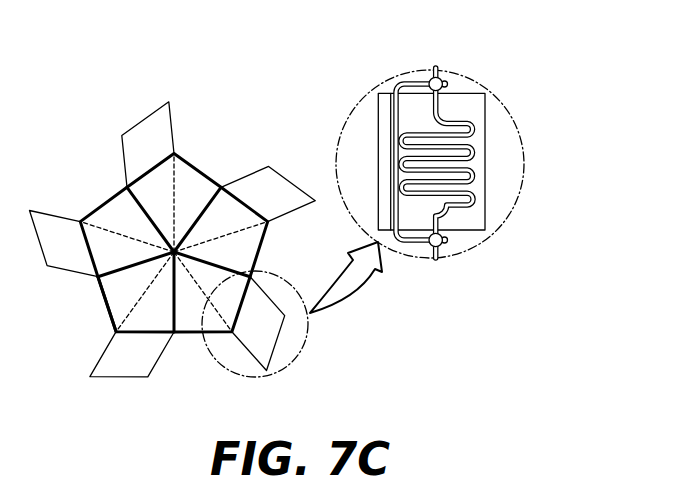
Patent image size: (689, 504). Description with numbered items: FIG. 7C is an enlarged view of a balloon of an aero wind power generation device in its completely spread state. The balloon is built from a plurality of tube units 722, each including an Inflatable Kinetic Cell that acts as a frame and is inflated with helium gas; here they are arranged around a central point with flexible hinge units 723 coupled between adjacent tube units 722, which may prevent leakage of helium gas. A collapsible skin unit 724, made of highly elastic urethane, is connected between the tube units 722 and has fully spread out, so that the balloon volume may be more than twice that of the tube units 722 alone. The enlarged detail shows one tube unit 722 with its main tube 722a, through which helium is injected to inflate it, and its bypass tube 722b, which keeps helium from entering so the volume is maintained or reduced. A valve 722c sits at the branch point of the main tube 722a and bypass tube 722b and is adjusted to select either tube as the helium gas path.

The tube unit 722 is at (123, 162).
The main tube 722a is at (484, 128).
The bypass tube 722b is at (405, 80).
The valve 722c is at (441, 79).
The flexible hinge unit 723 is at (200, 171).
The skin unit 724 is at (106, 299).